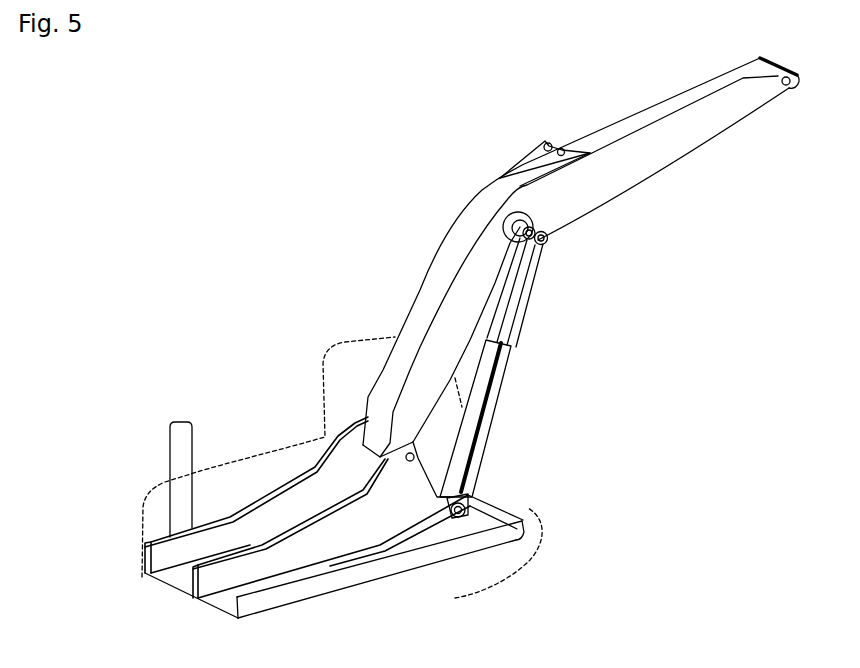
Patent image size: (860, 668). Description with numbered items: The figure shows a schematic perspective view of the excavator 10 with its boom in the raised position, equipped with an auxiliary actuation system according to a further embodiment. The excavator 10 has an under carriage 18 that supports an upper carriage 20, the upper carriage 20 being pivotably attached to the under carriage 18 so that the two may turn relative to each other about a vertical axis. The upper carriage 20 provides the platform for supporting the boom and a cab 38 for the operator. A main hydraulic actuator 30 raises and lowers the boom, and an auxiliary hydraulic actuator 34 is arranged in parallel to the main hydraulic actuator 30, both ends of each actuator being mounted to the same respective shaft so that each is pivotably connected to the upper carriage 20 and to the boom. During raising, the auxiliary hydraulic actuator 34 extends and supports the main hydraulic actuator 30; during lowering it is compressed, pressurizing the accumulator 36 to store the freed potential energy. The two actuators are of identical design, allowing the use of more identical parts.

The excavator 10 is at (384, 266).
The under carriage 18 is at (562, 560).
The upper carriage 20 is at (520, 479).
The main hydraulic actuator 30 is at (503, 298).
The auxiliary hydraulic actuator 34 is at (503, 380).
The accumulator 36 is at (177, 445).
The cab 38 is at (345, 342).